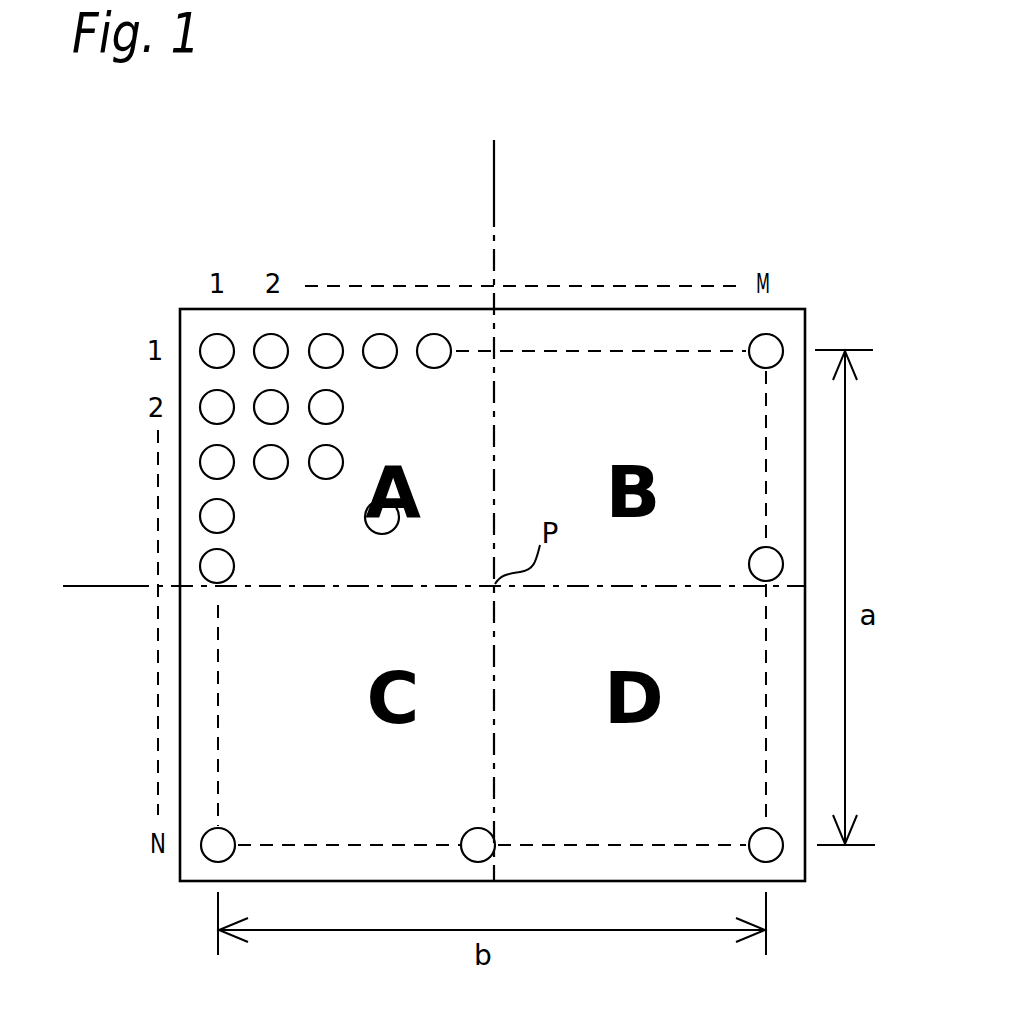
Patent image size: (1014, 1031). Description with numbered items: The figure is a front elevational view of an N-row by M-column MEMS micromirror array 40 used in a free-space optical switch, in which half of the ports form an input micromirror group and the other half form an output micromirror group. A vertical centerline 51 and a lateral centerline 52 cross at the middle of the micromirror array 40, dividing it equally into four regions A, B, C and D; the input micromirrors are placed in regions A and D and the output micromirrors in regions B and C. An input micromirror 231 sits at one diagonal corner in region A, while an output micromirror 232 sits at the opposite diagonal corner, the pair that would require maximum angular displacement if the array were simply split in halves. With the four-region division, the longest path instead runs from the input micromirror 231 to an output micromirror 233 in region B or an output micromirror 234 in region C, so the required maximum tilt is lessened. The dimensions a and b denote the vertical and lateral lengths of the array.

The micromirror array 40 is at (806, 320).
The vertical centerline 51 is at (493, 245).
The lateral centerline 52 is at (124, 587).
The input micromirror 231 is at (201, 344).
The output micromirror 232 is at (770, 861).
The output micromirror 233 is at (751, 571).
The output micromirror 234 is at (465, 836).